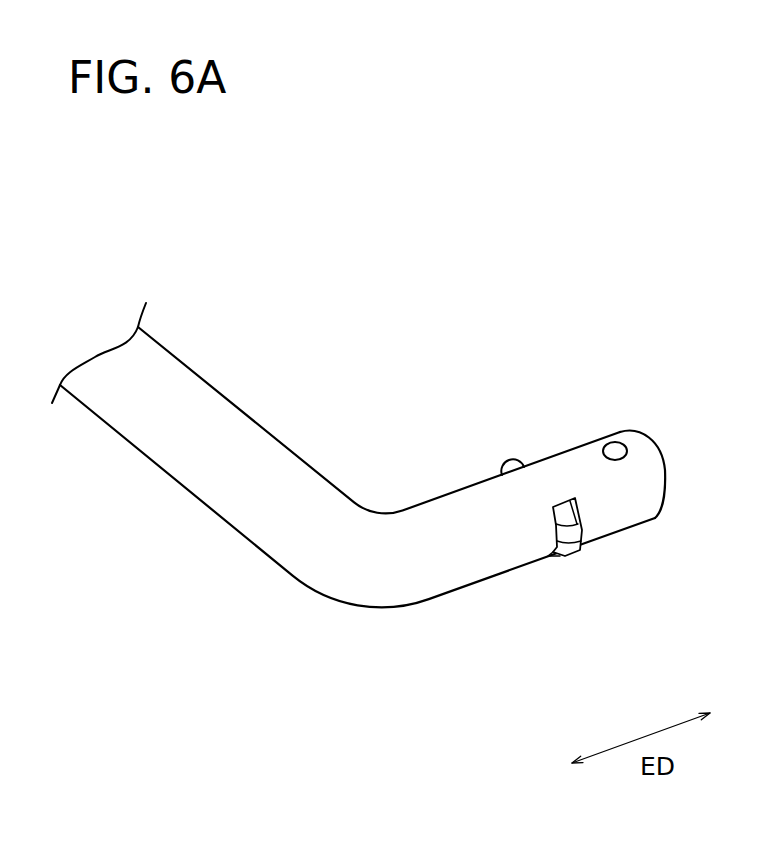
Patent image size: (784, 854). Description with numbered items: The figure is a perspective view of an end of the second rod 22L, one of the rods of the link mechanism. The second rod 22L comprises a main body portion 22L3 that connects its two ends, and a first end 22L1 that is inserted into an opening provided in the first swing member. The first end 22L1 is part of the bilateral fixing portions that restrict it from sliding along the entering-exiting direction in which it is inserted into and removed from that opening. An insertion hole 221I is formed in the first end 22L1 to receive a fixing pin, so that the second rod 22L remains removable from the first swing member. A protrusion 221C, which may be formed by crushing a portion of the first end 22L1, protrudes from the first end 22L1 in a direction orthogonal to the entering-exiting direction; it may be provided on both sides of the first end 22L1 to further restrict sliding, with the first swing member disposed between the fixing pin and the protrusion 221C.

The second rod 22L is at (645, 343).
The first end 22L1 is at (472, 565).
The main body portion 22L3 is at (222, 483).
The protrusion 221C is at (502, 460).
The insertion hole 221I is at (627, 452).